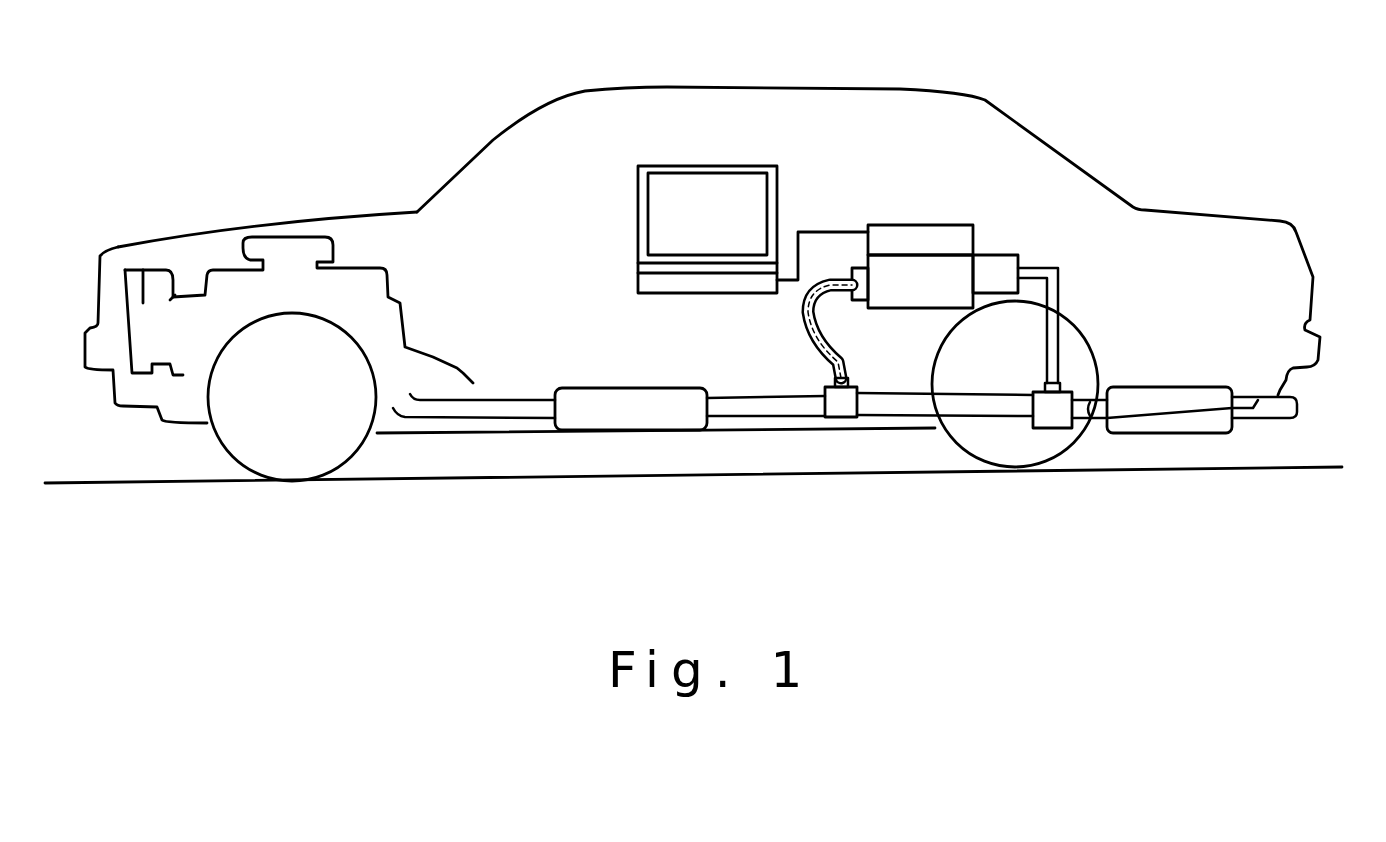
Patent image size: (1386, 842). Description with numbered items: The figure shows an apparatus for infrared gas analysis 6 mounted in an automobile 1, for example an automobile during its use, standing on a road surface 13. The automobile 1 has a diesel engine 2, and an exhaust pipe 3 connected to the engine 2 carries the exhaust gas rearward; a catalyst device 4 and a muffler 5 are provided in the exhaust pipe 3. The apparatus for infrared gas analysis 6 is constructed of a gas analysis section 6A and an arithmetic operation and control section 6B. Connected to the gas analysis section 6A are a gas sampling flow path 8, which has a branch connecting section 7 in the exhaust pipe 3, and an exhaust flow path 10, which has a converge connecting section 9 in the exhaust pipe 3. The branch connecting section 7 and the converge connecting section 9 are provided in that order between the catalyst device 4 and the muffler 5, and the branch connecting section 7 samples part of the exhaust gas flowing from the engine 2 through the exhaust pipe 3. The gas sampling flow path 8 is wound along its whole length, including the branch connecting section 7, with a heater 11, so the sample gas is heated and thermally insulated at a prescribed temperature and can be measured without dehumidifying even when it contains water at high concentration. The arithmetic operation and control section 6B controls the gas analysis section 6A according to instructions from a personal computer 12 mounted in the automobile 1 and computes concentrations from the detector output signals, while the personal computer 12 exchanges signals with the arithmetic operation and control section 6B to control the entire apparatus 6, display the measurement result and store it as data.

The automobile 1 is at (180, 233).
The engine 2 is at (227, 267).
The exhaust pipe 3 is at (763, 418).
The catalyst device 4 is at (610, 388).
The muffler 5 is at (1180, 390).
The apparatus for infrared gas analysis 6 is at (958, 235).
The gas analysis section 6A is at (957, 263).
The arithmetic operation and control section 6B is at (923, 233).
The branch connecting section 7 is at (845, 418).
The gas sampling flow path 8 is at (822, 356).
The converge connecting section 9 is at (1053, 428).
The exhaust flow path 10 is at (1060, 290).
The heater 11 is at (800, 310).
The personal computer 12 is at (705, 165).
The road surface 13 is at (1297, 466).